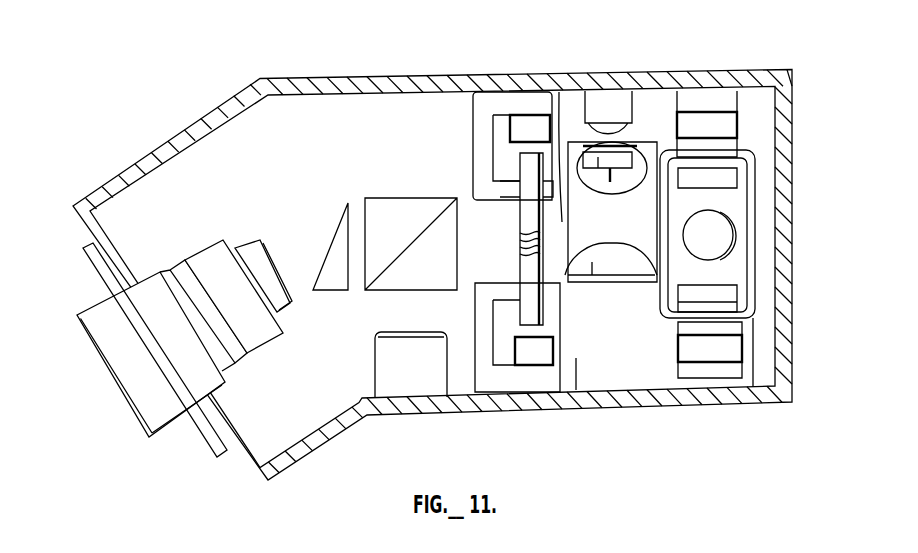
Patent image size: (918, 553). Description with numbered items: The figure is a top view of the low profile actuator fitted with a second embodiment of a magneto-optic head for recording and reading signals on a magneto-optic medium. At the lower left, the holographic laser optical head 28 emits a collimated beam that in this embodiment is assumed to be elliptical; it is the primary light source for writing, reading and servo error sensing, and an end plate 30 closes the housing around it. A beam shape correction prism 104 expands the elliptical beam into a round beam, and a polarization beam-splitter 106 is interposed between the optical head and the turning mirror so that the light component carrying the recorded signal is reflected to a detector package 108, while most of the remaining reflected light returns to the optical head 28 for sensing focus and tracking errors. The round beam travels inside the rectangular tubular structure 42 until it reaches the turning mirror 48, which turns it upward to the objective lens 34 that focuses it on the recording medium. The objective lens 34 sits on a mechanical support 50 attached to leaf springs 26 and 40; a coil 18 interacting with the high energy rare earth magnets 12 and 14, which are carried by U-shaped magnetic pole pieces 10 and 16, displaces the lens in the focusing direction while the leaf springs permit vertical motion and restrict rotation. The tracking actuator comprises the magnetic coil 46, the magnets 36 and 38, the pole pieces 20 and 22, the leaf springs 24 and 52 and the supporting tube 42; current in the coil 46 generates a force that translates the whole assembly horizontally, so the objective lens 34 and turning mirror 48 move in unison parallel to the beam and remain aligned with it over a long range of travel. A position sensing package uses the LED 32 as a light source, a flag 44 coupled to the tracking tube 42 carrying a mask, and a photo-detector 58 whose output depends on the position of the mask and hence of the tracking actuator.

The U-shape magnetic pole piece 10 is at (690, 102).
The magnet 12 is at (723, 133).
The magnet 14 is at (728, 347).
The U-shape magnetic pole piece 16 is at (723, 373).
The coil 18 is at (752, 208).
The pole piece 20 is at (482, 112).
The pole piece 22 is at (515, 378).
The leaf spring 24 is at (578, 395).
The leaf spring 26 is at (559, 92).
The holographic laser optical head 28 is at (207, 240).
The end plate 30 is at (93, 217).
The LED 32 is at (598, 90).
The objective lens 34 is at (731, 231).
The magnet 36 is at (541, 364).
The magnet 38 is at (517, 122).
The leaf spring 40 is at (622, 276).
The rectangular tubular structure 42 is at (585, 285).
The flag 44 is at (645, 142).
The magnetic coil 46 is at (520, 255).
The turning mirror 48 is at (728, 247).
The mechanical support 50 is at (740, 212).
The leaf spring 52 is at (758, 377).
The photo-detector 58 is at (600, 158).
The beam shape correction prism 104 is at (343, 208).
The polarization beam-splitter 106 is at (408, 197).
The detector package 108 is at (430, 372).